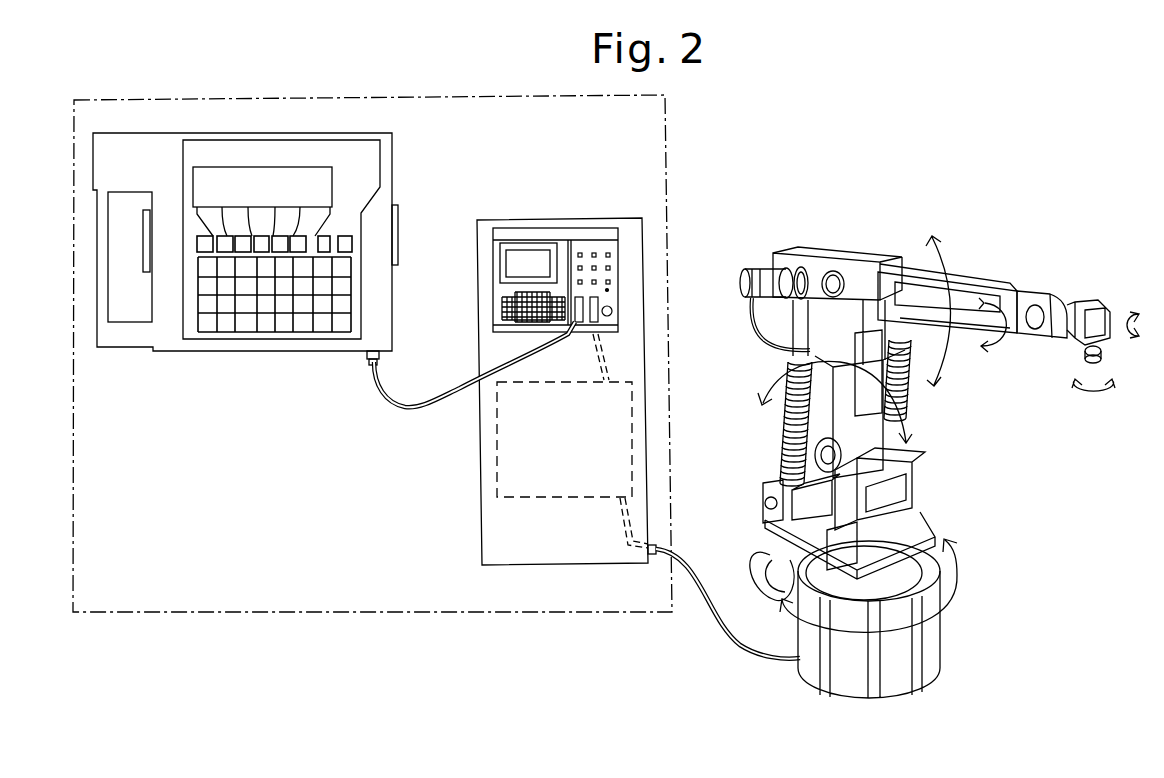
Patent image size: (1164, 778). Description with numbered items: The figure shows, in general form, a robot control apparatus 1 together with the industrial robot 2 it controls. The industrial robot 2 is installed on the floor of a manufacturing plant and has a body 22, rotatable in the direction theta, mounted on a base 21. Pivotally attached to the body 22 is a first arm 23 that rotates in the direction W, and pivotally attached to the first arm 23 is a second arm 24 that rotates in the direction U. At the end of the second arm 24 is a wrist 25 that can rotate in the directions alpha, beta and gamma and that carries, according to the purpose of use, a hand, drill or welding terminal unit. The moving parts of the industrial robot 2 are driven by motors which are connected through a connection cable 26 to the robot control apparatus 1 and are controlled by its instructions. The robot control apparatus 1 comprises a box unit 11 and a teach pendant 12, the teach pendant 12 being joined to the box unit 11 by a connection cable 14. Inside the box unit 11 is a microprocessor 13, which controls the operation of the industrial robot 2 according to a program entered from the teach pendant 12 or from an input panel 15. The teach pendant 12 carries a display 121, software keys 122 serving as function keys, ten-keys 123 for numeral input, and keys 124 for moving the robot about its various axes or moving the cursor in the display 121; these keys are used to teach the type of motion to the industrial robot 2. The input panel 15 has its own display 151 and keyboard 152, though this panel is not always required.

The robot control apparatus 1 is at (417, 93).
The industrial robot 2 is at (820, 240).
The box unit 11 is at (545, 372).
The teach pendant 12 is at (260, 248).
The microprocessor 13 is at (490, 452).
The connection cable 14 is at (449, 399).
The input panel 15 is at (526, 256).
The base 21 is at (938, 648).
The body 22 is at (905, 492).
The first arm 23 is at (900, 388).
The second arm 24 is at (990, 285).
The wrist 25 is at (1106, 341).
The connection cable 26 is at (735, 653).
The display 121 is at (247, 186).
The software keys 122 is at (265, 265).
The ten-keys 123 is at (235, 303).
The keys 124 is at (324, 310).
The display 151 is at (515, 258).
The keyboard 152 is at (500, 313).